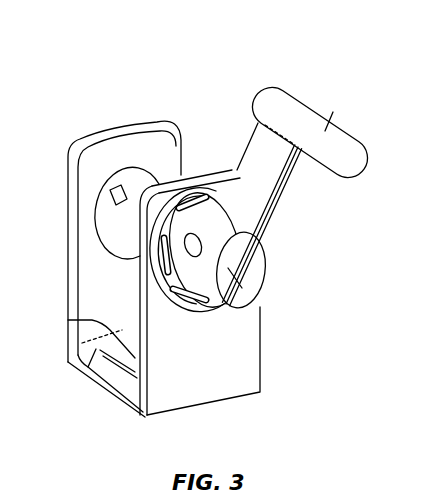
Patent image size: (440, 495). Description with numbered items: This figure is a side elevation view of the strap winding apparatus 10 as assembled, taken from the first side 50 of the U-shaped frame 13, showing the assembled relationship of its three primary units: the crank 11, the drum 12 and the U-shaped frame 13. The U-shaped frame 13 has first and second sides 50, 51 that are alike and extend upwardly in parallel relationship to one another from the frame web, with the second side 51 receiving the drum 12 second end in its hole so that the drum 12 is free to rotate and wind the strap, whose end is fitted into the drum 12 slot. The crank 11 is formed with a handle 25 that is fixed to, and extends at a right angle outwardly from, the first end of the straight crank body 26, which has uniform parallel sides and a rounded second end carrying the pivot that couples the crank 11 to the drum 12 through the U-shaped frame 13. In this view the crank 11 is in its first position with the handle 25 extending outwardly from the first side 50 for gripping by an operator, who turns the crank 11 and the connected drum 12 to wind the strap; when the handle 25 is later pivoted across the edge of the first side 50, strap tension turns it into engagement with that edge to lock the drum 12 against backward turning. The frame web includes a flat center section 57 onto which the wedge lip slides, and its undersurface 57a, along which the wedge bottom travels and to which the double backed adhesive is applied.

The strap winding apparatus 10 is at (214, 105).
The crank 11 is at (284, 226).
The drum 12 is at (104, 245).
The U-shaped frame 13 is at (132, 110).
The handle 25 is at (325, 131).
The crank body 26 is at (266, 186).
The first side 50 is at (225, 367).
The second side 51 is at (125, 298).
The flat center section 57 is at (68, 320).
The undersurface 57a is at (112, 393).